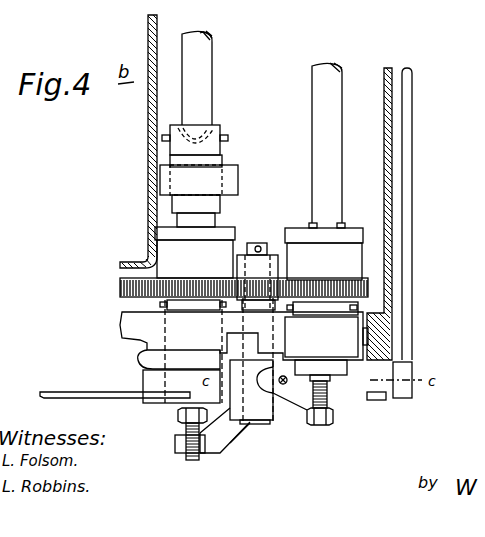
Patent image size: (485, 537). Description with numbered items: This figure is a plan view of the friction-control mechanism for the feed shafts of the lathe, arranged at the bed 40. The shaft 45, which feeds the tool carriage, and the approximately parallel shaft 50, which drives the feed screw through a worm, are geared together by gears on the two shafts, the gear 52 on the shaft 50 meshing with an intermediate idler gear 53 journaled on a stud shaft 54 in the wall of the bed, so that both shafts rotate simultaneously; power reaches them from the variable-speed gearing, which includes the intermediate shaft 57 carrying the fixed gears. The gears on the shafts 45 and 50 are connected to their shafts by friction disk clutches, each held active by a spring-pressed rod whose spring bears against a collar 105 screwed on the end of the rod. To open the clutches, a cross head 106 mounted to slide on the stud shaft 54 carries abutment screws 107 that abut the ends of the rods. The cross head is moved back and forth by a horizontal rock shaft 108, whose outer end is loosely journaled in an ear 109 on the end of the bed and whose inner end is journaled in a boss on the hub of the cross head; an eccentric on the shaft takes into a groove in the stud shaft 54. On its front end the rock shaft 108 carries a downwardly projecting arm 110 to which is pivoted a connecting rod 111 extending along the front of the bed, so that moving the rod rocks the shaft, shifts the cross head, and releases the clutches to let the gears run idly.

The bed 40 is at (390, 67).
The shaft 45 is at (207, 89).
The shaft 50 is at (338, 207).
The gear 52 is at (330, 288).
The intermediate idler gear 53 is at (254, 280).
The stud shaft 54 is at (256, 413).
The intermediate shaft 57 is at (189, 287).
The collar 105 is at (182, 409).
The cross head 106 is at (303, 420).
The abutment screws 107 is at (196, 460).
The rock shaft 108 is at (352, 384).
The ear 109 is at (383, 400).
The arm 110 is at (428, 370).
The connecting rod 111 is at (408, 205).